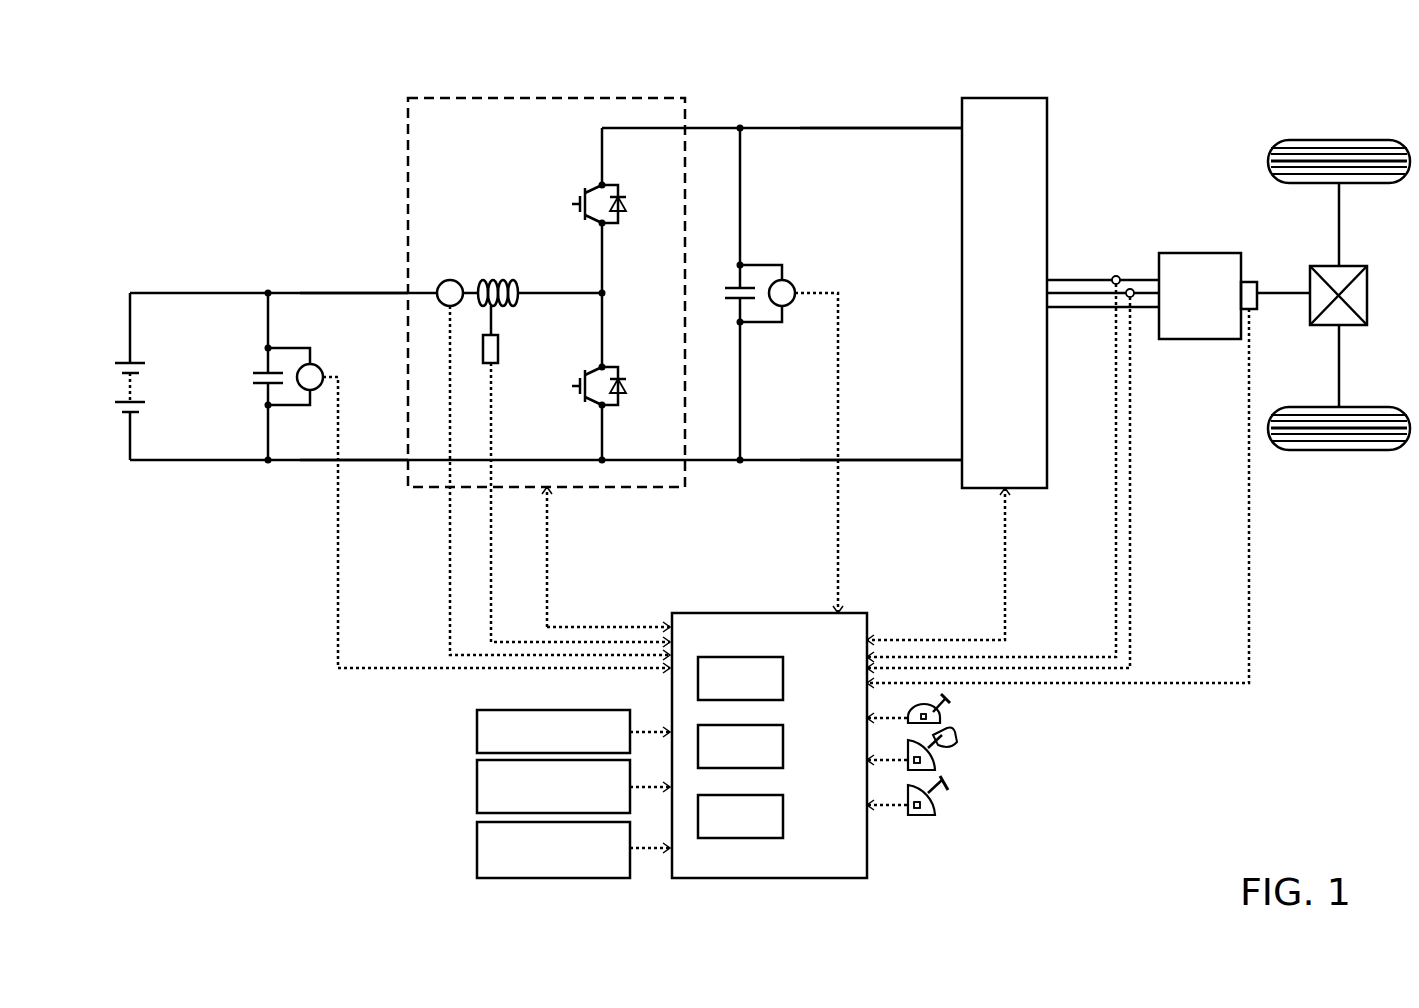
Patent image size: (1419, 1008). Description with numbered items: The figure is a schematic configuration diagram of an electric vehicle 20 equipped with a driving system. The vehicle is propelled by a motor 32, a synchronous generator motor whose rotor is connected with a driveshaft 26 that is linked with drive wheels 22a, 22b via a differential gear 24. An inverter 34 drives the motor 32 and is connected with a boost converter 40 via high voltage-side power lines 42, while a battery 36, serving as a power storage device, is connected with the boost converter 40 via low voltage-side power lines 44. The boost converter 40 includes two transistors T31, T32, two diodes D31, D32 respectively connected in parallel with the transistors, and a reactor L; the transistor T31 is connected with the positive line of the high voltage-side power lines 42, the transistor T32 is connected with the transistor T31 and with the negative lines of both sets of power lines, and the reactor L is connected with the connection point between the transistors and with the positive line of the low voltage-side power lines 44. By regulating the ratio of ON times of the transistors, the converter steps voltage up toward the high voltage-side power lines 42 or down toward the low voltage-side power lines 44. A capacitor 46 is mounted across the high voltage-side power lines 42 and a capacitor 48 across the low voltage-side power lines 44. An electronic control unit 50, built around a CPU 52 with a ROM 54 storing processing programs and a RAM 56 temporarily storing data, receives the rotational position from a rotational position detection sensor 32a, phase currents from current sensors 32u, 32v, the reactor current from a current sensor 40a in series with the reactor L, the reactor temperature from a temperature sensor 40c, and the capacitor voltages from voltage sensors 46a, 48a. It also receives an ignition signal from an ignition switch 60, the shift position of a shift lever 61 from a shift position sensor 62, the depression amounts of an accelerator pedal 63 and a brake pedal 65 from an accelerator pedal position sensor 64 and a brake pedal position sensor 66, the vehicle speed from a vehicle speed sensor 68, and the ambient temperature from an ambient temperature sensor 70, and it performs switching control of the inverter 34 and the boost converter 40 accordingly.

The electric vehicle 20 is at (1242, 72).
The drive wheel 22a is at (1338, 140).
The drive wheel 22b is at (1338, 452).
The differential gear 24 is at (1350, 266).
The driveshaft 26 is at (1283, 293).
The motor 32 is at (1199, 253).
The rotational position detection sensor 32a is at (1248, 282).
The current sensor 32u is at (1115, 276).
The current sensor 32v is at (1131, 289).
The inverter 34 is at (992, 98).
The battery 36 is at (127, 420).
The boost converter 40 is at (601, 98).
The current sensor 40a is at (449, 280).
The temperature sensor 40c is at (498, 350).
The reactor L is at (499, 280).
The transistor T31 is at (580, 194).
The transistor T32 is at (580, 376).
The diode D31 is at (620, 213).
The diode D32 is at (620, 395).
The high voltage-side power lines 42 is at (922, 128).
The low voltage-side power lines 44 is at (375, 293).
The capacitor 46 is at (730, 285).
The voltage sensor 46a is at (785, 280).
The capacitor 48 is at (258, 368).
The voltage sensor 48a is at (318, 367).
The electronic control unit 50 is at (755, 613).
The CPU 52 is at (783, 678).
The ROM 54 is at (783, 746).
The RAM 56 is at (783, 816).
The ignition switch 60 is at (477, 732).
The shift lever 61 is at (945, 703).
The shift position sensor 62 is at (945, 720).
The accelerator pedal 63 is at (957, 748).
The accelerator pedal position sensor 64 is at (950, 766).
The brake pedal 65 is at (950, 792).
The brake pedal position sensor 66 is at (950, 812).
The vehicle speed sensor 68 is at (477, 787).
The ambient temperature sensor 70 is at (477, 848).